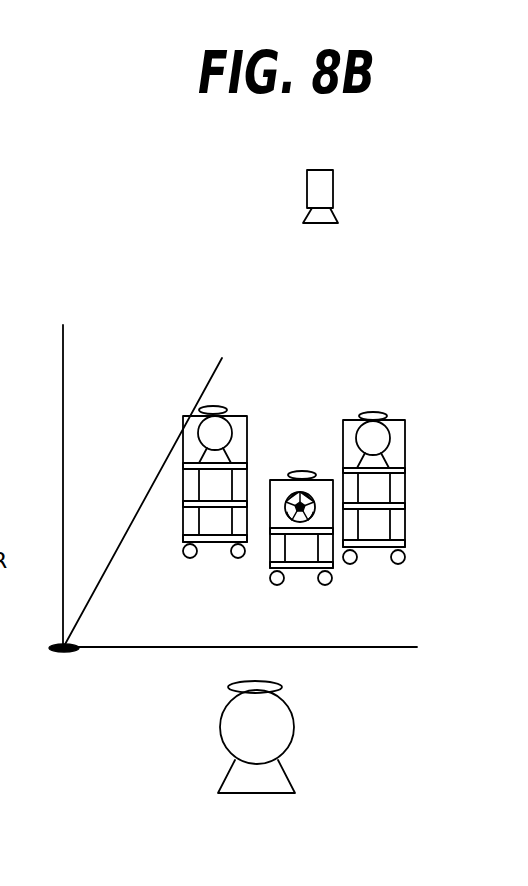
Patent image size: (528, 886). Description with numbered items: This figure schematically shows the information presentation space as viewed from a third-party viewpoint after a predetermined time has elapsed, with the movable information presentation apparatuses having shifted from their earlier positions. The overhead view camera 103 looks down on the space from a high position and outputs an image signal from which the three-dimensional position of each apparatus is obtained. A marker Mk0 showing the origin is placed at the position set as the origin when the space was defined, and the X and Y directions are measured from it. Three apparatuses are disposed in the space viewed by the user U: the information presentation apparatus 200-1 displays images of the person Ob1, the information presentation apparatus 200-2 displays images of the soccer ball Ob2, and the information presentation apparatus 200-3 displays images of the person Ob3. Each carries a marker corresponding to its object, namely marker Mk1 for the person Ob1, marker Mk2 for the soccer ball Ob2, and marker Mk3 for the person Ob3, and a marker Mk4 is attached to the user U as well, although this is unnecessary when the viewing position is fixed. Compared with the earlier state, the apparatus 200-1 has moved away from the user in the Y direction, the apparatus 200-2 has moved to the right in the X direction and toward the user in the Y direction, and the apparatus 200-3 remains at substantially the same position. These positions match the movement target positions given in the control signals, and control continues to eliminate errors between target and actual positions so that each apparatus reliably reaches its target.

The overhead view camera 103 is at (325, 193).
The information presentation apparatus 200-1 is at (185, 453).
The information presentation apparatus 200-2 is at (277, 478).
The information presentation apparatus 200-3 is at (405, 457).
The person Ob1 is at (203, 430).
The soccer ball Ob2 is at (288, 511).
The person Ob3 is at (385, 437).
The marker Mk0 is at (65, 654).
The marker Mk1 is at (215, 407).
The marker Mk2 is at (296, 471).
The marker Mk3 is at (372, 412).
The marker Mk4 is at (281, 686).
The user U is at (295, 720).